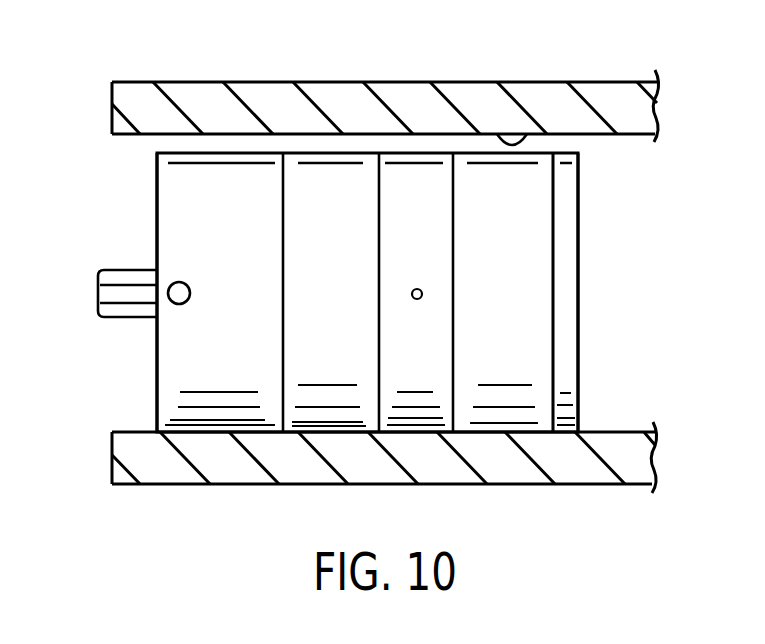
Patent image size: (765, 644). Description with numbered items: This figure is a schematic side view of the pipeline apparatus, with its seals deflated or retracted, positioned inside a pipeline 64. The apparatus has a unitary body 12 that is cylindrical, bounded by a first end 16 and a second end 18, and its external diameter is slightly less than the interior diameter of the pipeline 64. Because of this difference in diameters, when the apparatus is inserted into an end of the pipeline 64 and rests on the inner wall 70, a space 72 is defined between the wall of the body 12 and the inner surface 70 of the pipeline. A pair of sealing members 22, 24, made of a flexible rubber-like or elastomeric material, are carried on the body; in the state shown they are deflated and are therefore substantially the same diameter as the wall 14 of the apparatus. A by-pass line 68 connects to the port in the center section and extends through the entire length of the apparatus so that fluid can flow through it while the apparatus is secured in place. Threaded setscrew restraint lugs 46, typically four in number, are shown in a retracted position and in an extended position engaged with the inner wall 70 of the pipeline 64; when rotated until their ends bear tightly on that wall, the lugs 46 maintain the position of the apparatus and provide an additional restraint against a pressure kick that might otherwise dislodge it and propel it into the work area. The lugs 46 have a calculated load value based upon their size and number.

The unitary body 12 is at (578, 240).
The wall 14 is at (427, 172).
The first end 16 is at (157, 220).
The second end 18 is at (578, 318).
The sealing member 22 is at (323, 182).
The sealing member 24 is at (520, 193).
The threaded setscrew restraint lug 46 is at (181, 304).
The pipeline 64 is at (537, 95).
The by-pass line 68 is at (130, 288).
The inner wall 70 is at (495, 134).
The space 72 is at (207, 142).